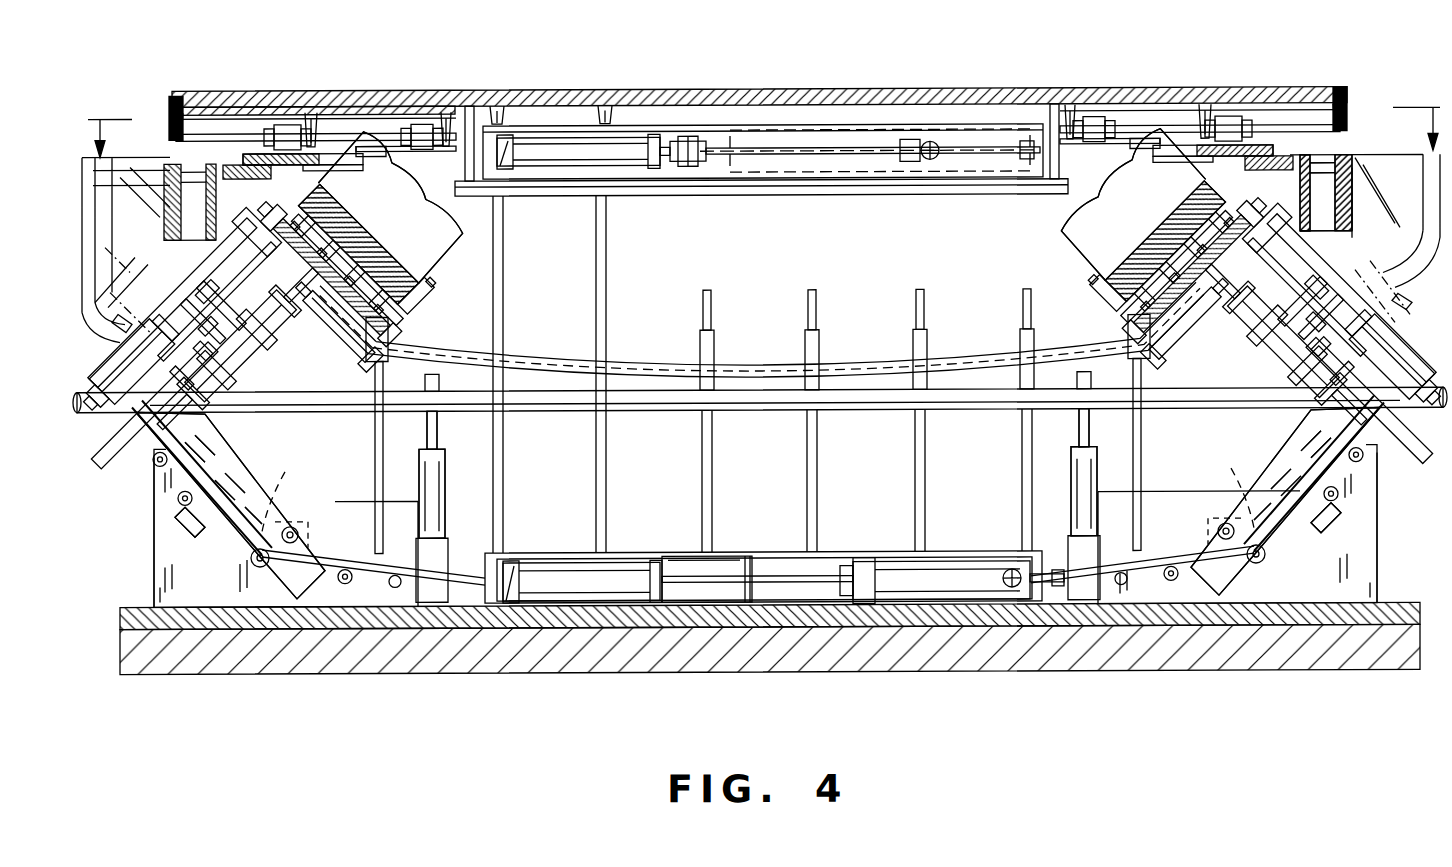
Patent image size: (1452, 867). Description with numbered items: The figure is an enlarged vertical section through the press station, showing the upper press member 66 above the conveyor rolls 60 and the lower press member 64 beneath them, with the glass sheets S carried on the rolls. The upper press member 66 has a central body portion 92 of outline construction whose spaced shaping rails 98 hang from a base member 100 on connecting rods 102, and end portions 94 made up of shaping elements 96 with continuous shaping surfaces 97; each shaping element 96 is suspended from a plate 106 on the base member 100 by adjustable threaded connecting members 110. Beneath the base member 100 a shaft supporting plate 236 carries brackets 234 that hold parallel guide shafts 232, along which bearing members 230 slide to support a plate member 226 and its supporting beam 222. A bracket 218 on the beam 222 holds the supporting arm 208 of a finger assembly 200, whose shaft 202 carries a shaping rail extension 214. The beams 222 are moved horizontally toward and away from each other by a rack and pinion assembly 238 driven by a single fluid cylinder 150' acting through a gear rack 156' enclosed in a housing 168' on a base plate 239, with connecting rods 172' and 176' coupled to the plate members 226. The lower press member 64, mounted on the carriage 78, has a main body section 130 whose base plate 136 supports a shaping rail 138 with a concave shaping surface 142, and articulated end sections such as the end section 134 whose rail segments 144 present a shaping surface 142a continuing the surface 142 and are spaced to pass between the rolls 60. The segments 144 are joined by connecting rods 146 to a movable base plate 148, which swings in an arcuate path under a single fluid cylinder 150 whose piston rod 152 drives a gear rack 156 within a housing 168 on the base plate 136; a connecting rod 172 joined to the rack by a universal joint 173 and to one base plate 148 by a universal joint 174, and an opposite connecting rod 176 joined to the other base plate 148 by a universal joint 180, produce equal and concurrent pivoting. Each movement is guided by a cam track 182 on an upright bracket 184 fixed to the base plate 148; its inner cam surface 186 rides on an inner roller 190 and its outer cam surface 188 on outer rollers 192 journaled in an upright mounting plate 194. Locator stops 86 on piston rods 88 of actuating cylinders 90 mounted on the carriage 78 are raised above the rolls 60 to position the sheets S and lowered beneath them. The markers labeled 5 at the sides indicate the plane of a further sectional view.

The section line 5- 5 is at (755, 114).
The conveyor rolls 60 is at (790, 410).
The lower press member 64 is at (157, 538).
The upper press member 66 is at (150, 100).
The carriage 78 is at (975, 662).
The locator stops 86 is at (436, 428).
The piston rod 88 is at (445, 440).
The actuating cylinder 90 is at (450, 477).
The central body portion 92 is at (641, 348).
The end portions 94 is at (265, 218).
The shaping elements 96 is at (375, 318).
The shaping surfaces 97 is at (345, 305).
The shaping rails 98 is at (955, 350).
The base member 100 is at (765, 90).
The connecting rods 102 is at (596, 262).
The plate 106 is at (395, 246).
The connecting members 110 is at (345, 236).
The main body section 130 is at (665, 392).
The articulated end section 134 is at (172, 478).
The base plate 136 is at (628, 628).
The shaping rail 138 is at (911, 378).
The shaping surface 142 is at (870, 370).
The upper shaping surface 142a is at (355, 340).
The segments 144 is at (255, 246).
The connecting rods 146 is at (280, 330).
The movable base plate 148 is at (150, 430).
The fluid cylinder 150 is at (763, 556).
The fluid cylinder 150' is at (578, 110).
The piston rod 152 is at (760, 576).
The gear rack 156 is at (935, 554).
The gear rack 156' is at (694, 108).
The housing 168 is at (682, 550).
The housing 168' is at (873, 102).
The connecting rod 172 is at (1038, 542).
The connecting rod 172' is at (955, 104).
The universal joint 173 is at (1015, 568).
The universal joint 174 is at (1285, 560).
The connecting rod 176 is at (373, 556).
The connecting rod 176' is at (755, 103).
The universal joint 180 is at (252, 562).
The cam track 182 is at (302, 530).
The upright bracket 184 is at (232, 460).
The inner cam surface 186 is at (268, 510).
The outer cam surface 188 is at (155, 500).
The inner roller 190 is at (290, 520).
The outer rollers 192 is at (185, 504).
The upright mounting plate 194 is at (152, 585).
The finger assemblies 200 is at (215, 284).
The shaft 202 is at (1250, 315).
The supporting arm 208 is at (1315, 285).
The shaping rail extension 214 is at (1252, 250).
The bracket 218 is at (1340, 170).
The supporting beam 222 is at (255, 152).
The plate member 226 is at (260, 163).
The bearing members 230 is at (288, 123).
The guide shafts 232 is at (342, 130).
The brackets 234 is at (313, 112).
The shaft supporting plate 236 is at (178, 105).
The rack and pinion assembly 238 is at (878, 122).
The base plate 239 is at (740, 196).
The glass sheets S is at (740, 360).